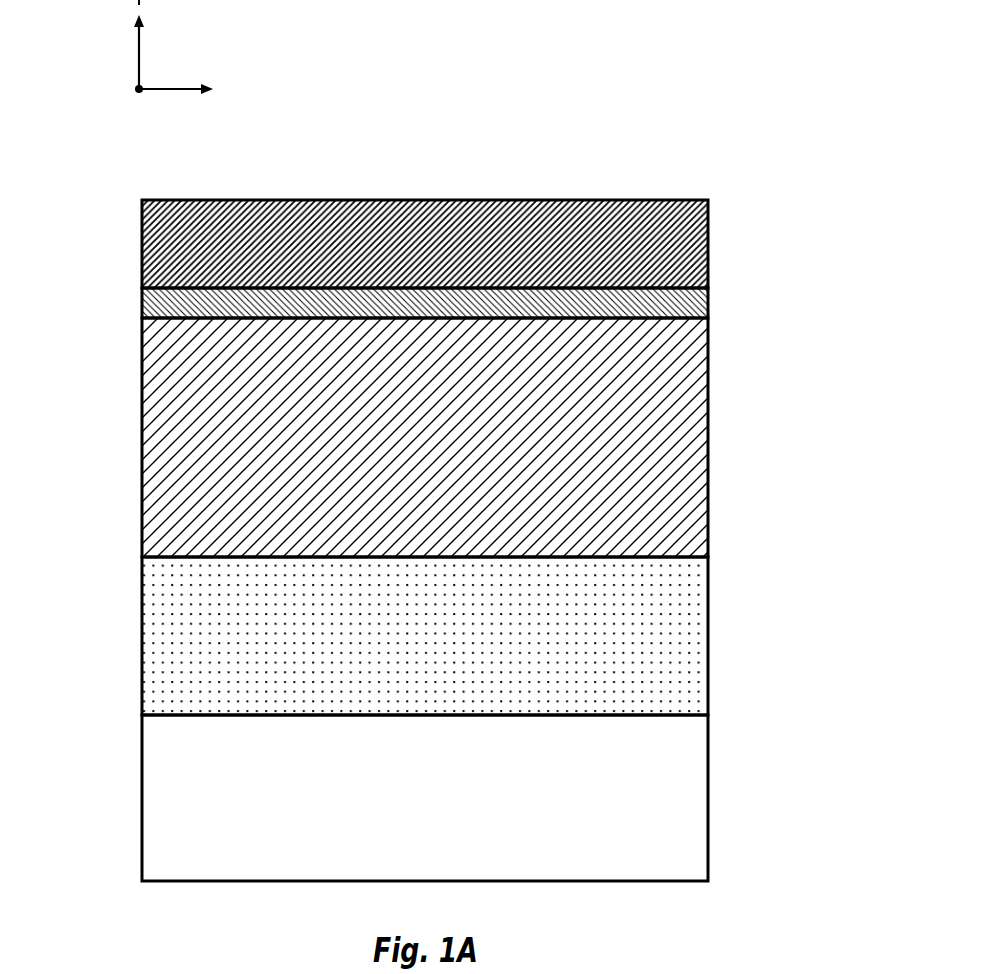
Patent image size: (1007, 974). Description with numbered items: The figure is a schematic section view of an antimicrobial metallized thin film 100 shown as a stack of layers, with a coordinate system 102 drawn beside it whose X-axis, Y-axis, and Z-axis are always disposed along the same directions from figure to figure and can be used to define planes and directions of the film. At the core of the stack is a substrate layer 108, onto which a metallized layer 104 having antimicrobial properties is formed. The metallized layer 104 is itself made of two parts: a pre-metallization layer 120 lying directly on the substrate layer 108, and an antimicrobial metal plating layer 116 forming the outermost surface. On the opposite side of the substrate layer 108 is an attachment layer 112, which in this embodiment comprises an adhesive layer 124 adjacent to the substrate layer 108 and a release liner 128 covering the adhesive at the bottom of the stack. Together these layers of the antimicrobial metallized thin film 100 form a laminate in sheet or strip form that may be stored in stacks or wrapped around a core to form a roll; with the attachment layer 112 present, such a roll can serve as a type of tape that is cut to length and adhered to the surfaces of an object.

The antimicrobial metallized thin film 100 is at (551, 148).
The coordinate system 102 is at (151, 77).
The metallized layer 104 is at (447, 259).
The substrate layer 108 is at (708, 442).
The attachment layer 112 is at (447, 719).
The antimicrobial metal plating layer 116 is at (142, 240).
The pre-metallization layer 120 is at (142, 305).
The adhesive layer 124 is at (142, 640).
The release liner 128 is at (142, 802).